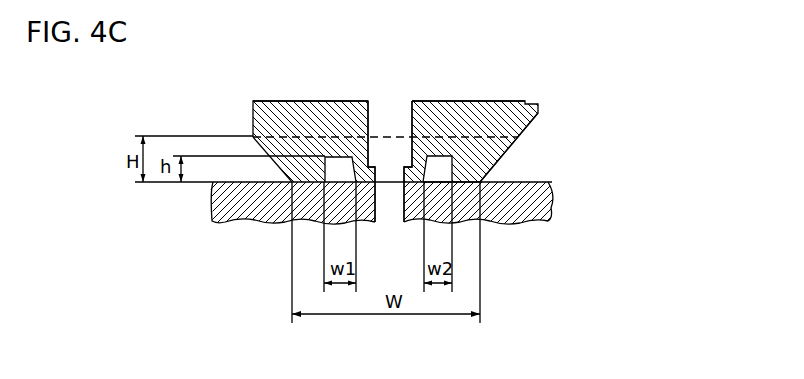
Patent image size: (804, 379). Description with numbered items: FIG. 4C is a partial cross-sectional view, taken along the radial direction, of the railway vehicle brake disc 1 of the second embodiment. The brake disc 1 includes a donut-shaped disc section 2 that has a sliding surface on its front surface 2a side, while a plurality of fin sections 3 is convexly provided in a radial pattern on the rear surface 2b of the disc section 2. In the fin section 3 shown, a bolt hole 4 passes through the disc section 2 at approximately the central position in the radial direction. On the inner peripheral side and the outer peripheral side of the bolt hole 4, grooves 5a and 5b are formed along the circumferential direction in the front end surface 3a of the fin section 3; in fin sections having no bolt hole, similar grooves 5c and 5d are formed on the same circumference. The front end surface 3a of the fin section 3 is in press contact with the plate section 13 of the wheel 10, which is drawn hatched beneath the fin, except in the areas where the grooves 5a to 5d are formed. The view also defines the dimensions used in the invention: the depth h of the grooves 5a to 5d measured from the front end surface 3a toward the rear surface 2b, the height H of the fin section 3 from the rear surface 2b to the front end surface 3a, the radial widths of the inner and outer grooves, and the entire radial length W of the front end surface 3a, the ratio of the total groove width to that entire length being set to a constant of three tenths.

The brake disc 1 is at (385, 131).
The disc section 2 is at (385, 131).
The front surface 2a is at (488, 101).
The rear surface 2b is at (518, 137).
The fin section 3 is at (500, 158).
The front end surface 3a is at (468, 190).
The bolt hole 4 is at (385, 134).
The groove 5a is at (317, 112).
The groove 5b is at (462, 112).
The groove 5c is at (337, 162).
The groove 5d is at (442, 163).
The wheel 10 is at (552, 211).
The plate section 13 is at (436, 216).